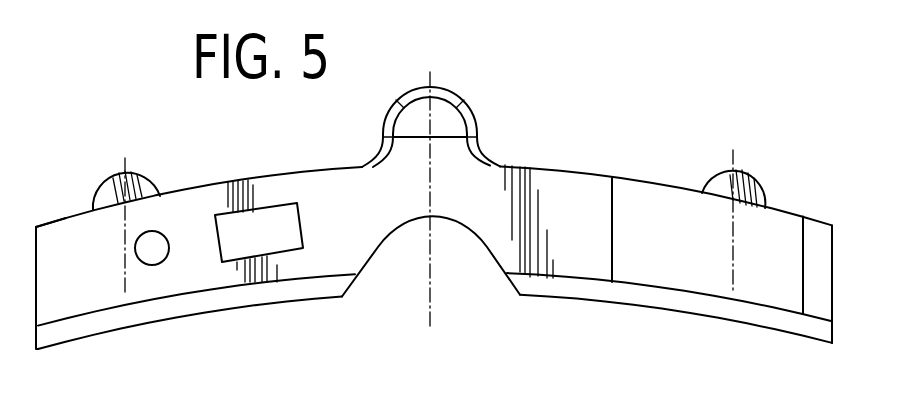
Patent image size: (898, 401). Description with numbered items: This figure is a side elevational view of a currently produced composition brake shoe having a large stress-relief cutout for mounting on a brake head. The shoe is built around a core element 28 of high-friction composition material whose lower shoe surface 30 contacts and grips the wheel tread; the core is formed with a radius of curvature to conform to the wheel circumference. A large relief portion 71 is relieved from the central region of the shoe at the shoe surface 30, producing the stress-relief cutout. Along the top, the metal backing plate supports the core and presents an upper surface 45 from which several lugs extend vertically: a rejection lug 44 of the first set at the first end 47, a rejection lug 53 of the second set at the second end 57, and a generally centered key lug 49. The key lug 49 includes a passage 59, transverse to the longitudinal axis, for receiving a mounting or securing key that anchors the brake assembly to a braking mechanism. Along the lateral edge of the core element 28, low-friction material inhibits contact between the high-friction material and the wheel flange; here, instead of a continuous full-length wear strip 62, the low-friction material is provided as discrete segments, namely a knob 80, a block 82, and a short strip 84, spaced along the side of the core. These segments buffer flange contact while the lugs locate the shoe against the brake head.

The core element 28 is at (50, 334).
The shoe surface 30 is at (102, 336).
The rejection lug 44 is at (128, 170).
The upper surface 45 is at (243, 180).
The first end 47 is at (36, 227).
The key lug 49 is at (478, 122).
The rejection lug 53 is at (763, 181).
The second end 57 is at (832, 225).
The passage 59 is at (413, 113).
The wear strip 62 is at (40, 254).
The relief portion 71 is at (418, 278).
The knob 80 is at (168, 243).
The block 82 is at (303, 223).
The short strip 84 is at (635, 238).